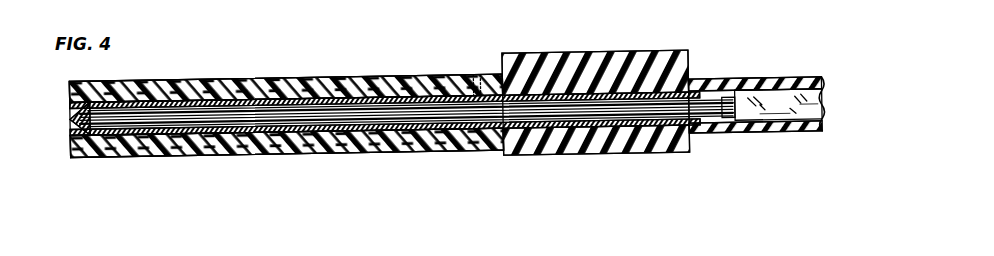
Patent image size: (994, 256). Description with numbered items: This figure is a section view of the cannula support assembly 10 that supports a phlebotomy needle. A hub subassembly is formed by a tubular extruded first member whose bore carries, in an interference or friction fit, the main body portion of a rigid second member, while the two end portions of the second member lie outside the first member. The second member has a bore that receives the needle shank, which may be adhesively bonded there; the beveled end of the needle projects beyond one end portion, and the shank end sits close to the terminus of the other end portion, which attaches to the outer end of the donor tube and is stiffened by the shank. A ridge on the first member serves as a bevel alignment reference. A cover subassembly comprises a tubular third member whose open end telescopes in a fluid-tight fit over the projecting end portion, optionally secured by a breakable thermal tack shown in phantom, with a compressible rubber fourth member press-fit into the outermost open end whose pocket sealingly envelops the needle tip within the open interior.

The assembly 10 is at (732, 40).